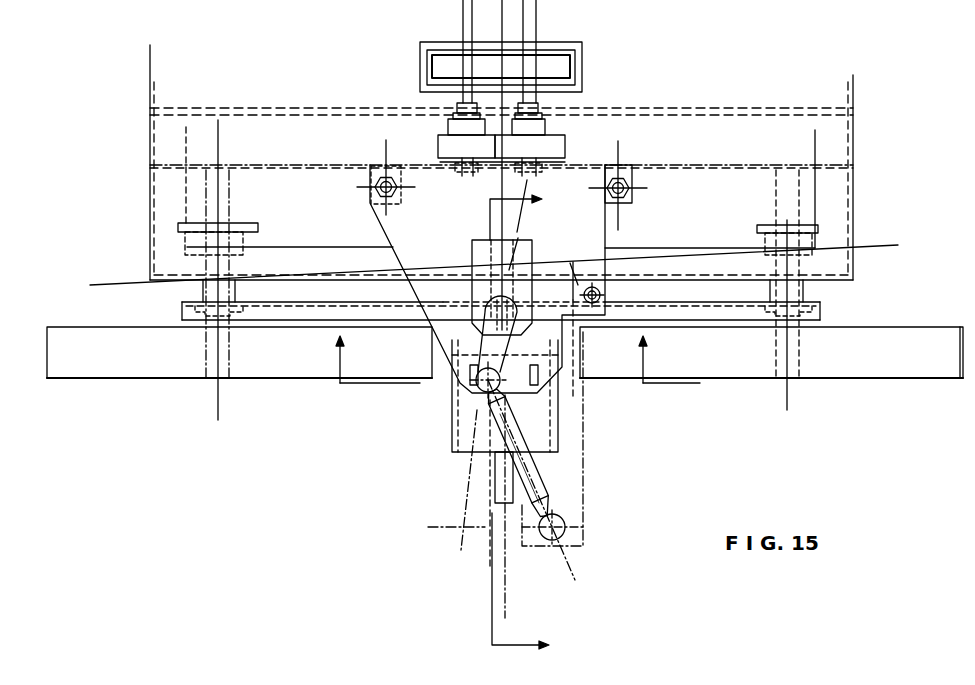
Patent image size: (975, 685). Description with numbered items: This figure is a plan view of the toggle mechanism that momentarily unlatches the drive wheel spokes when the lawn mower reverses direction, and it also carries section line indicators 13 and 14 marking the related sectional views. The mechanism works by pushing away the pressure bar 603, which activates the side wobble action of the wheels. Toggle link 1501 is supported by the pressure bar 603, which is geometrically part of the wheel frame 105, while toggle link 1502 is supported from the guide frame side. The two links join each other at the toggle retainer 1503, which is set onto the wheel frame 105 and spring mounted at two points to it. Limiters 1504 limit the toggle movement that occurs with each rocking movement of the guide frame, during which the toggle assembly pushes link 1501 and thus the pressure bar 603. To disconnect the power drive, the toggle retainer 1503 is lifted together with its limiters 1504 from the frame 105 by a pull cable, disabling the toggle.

The frame 105 is at (853, 241).
The pressure bar 603 is at (454, 306).
The section line 13 is at (518, 359).
The section line 14 is at (531, 425).
The toggle link 1501 is at (497, 362).
The toggle link 1502 is at (545, 482).
The toggle retainer 1503 is at (452, 383).
The limiters 1504 is at (478, 372).